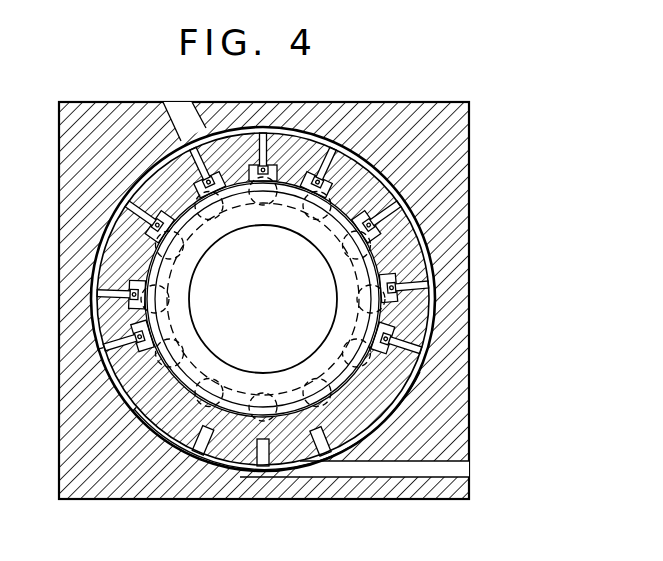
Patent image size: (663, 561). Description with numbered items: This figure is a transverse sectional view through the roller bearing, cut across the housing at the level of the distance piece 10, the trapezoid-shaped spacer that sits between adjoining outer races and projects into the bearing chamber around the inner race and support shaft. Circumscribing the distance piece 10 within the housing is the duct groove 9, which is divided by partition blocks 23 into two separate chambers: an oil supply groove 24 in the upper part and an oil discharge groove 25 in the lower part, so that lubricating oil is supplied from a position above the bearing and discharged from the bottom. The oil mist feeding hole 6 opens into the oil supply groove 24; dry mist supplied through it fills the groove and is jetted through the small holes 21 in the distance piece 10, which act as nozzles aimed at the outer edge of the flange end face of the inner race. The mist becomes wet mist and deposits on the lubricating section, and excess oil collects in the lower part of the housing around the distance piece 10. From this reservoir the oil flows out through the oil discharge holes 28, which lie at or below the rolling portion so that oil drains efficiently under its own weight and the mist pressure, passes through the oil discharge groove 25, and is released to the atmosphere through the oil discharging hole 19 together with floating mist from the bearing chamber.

The oil mist feeding hole 6 is at (183, 115).
The duct groove 9 is at (437, 262).
The distance piece 10 is at (296, 188).
The oil discharging hole 19 is at (346, 470).
The small holes 21 is at (257, 150).
The partition blocks 23 is at (410, 378).
The oil supply groove 24 is at (382, 180).
The oil discharge groove 25 is at (372, 434).
The oil discharge holes 28 is at (203, 445).